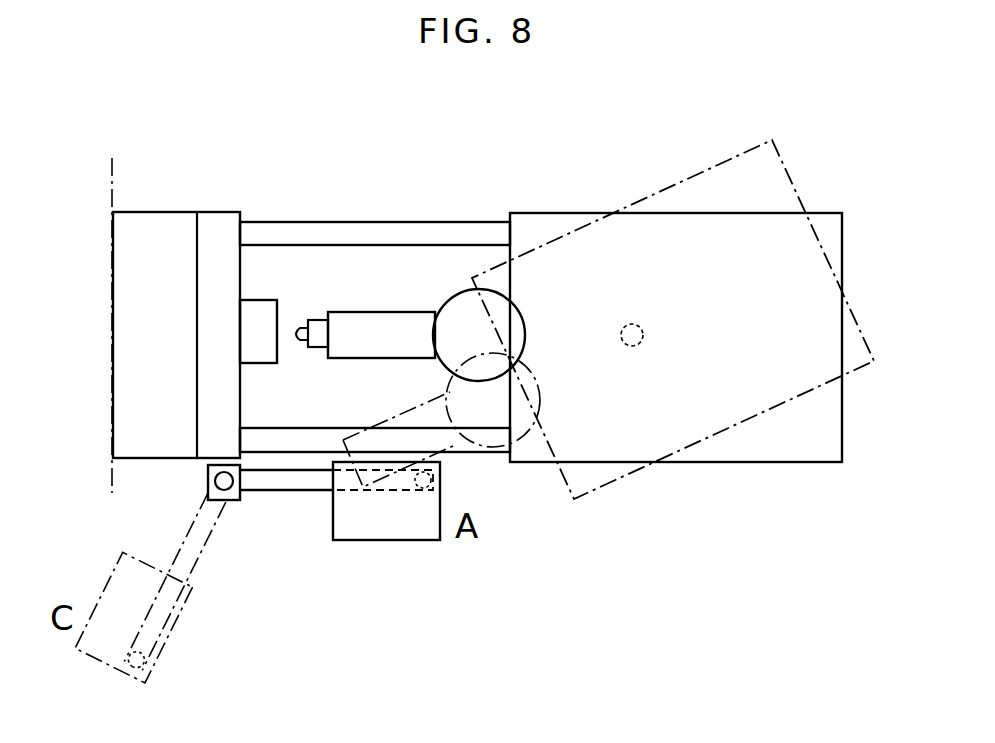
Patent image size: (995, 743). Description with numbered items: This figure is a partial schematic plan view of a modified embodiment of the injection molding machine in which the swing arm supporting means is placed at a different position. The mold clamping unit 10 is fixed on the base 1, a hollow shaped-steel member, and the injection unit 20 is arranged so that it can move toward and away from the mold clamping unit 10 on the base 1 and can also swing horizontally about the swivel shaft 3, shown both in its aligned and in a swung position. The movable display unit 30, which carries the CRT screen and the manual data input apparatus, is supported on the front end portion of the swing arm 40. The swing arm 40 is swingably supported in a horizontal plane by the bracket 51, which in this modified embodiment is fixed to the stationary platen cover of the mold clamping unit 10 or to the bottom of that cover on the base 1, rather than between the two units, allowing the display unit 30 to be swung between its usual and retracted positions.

The base 1 is at (327, 232).
The swivel shaft 3 is at (640, 326).
The mold clamping unit 10 is at (170, 232).
The injection unit 20 is at (670, 183).
The display unit 30 is at (393, 542).
The swing arm 40 is at (286, 496).
The bracket 51 is at (208, 481).